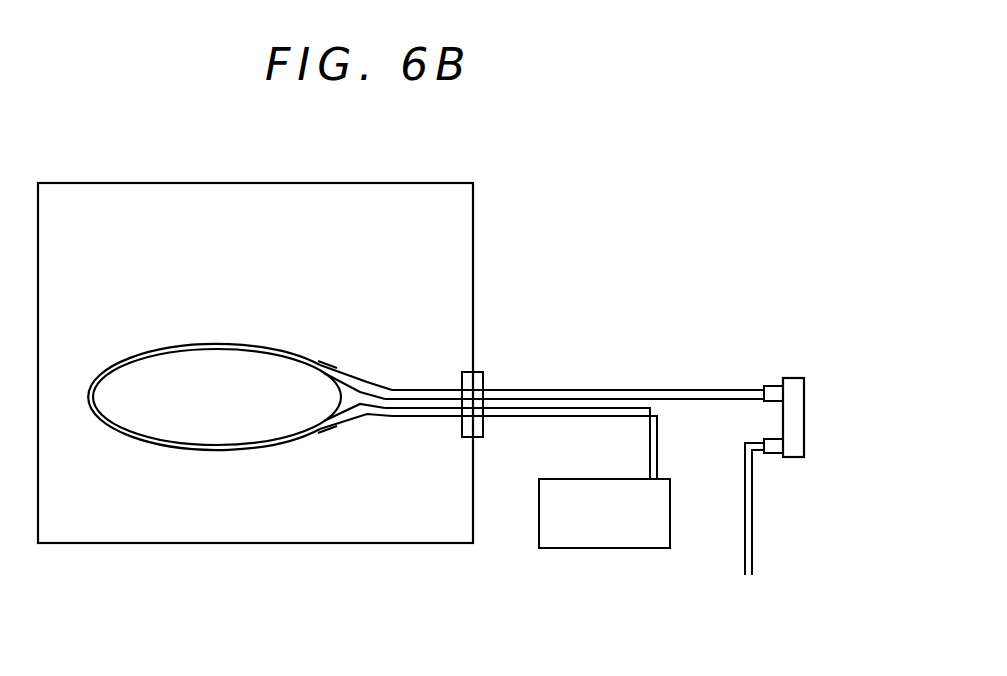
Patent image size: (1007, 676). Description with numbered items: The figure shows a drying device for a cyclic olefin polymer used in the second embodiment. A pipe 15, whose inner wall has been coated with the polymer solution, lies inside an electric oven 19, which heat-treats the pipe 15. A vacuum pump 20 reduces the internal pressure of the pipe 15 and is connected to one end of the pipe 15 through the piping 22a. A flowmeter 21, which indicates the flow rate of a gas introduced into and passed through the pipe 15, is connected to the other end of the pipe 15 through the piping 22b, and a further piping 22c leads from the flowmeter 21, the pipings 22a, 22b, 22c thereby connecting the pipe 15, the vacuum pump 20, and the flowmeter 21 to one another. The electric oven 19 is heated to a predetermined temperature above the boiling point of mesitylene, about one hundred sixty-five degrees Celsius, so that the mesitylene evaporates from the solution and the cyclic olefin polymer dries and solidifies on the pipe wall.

The pipe 15 is at (122, 359).
The electric oven 19 is at (456, 266).
The vacuum pump 20 is at (568, 541).
The flowmeter 21 is at (793, 385).
The piping 22a is at (551, 410).
The piping 22b is at (608, 390).
The piping 22c is at (752, 531).